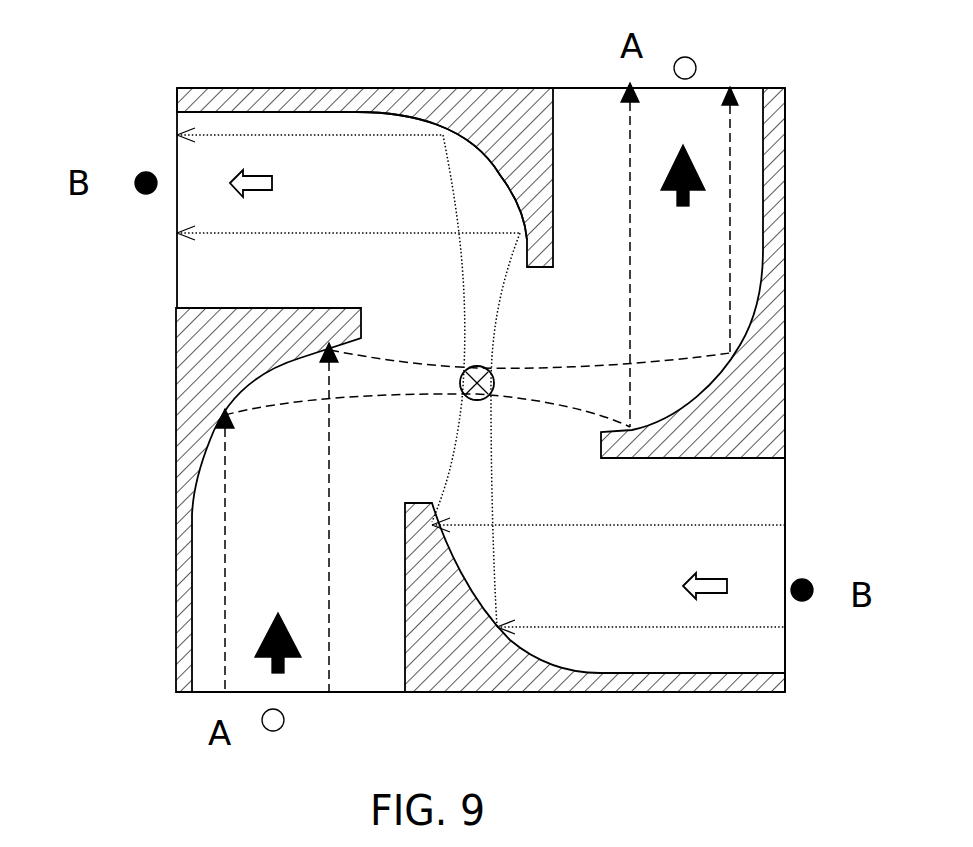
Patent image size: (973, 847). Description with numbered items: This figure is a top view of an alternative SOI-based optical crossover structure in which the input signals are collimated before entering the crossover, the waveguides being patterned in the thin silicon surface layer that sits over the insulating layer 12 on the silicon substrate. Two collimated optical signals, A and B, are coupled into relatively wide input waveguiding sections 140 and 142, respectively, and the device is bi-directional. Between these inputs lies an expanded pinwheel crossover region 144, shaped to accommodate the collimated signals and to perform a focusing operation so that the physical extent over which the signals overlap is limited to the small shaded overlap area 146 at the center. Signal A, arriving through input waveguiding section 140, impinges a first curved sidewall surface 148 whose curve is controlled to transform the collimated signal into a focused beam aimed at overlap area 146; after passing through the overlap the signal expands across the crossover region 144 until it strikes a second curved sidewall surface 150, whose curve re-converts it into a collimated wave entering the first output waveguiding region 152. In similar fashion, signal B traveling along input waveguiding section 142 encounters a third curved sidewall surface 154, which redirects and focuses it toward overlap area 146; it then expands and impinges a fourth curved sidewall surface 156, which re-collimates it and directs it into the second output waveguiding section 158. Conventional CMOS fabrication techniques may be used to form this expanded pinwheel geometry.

The insulating layer 12 is at (787, 440).
The input waveguiding section 140 is at (205, 648).
The input waveguiding section 142 is at (733, 507).
The expanded pinwheel crossover region 144 is at (512, 351).
The overlap area 146 is at (463, 390).
The first curved sidewall surface 148 is at (240, 388).
The second curved sidewall surface 150 is at (723, 378).
The first output waveguiding region 152 is at (687, 132).
The third curved sidewall surface 154 is at (527, 645).
The fourth curved sidewall surface 156 is at (488, 163).
The second output waveguiding section 158 is at (318, 125).